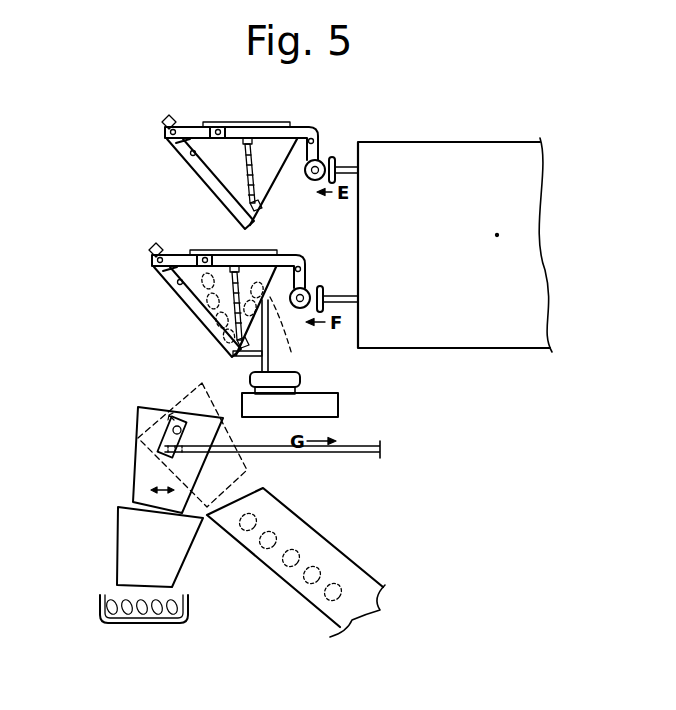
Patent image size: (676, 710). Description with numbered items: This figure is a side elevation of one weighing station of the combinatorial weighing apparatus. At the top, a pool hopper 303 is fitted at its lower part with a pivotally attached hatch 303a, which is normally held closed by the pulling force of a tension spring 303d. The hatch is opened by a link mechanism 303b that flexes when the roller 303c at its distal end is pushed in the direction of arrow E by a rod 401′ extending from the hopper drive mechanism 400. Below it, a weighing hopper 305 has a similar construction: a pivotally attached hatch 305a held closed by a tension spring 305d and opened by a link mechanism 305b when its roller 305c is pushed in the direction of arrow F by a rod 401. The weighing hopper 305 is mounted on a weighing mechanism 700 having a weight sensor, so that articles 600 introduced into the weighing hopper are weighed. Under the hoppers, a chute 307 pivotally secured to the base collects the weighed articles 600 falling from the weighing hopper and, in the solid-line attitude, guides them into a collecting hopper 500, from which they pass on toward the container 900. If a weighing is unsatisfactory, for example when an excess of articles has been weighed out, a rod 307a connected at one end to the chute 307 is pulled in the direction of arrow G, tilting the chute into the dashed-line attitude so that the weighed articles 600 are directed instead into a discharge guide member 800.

The pool hopper 303 is at (250, 122).
The hatch 303a is at (198, 184).
The link mechanism 303b is at (218, 125).
The roller 303c is at (312, 181).
The tension spring 303d is at (258, 165).
The weighing hopper 305 is at (208, 250).
The hatch 305a is at (172, 300).
The link mechanism 305b is at (250, 262).
The roller 305c is at (300, 310).
The tension spring 305d is at (235, 297).
The chute 307 is at (138, 410).
The rod 307a is at (318, 455).
The hopper drive mechanism 400 is at (413, 150).
The rod 401 is at (338, 295).
The rod 401′ is at (340, 166).
The collecting hopper 500 is at (117, 528).
The articles 600 is at (302, 336).
The weighing mechanism 700 is at (320, 398).
The discharge guide member 800 is at (335, 541).
The container 900 is at (100, 607).